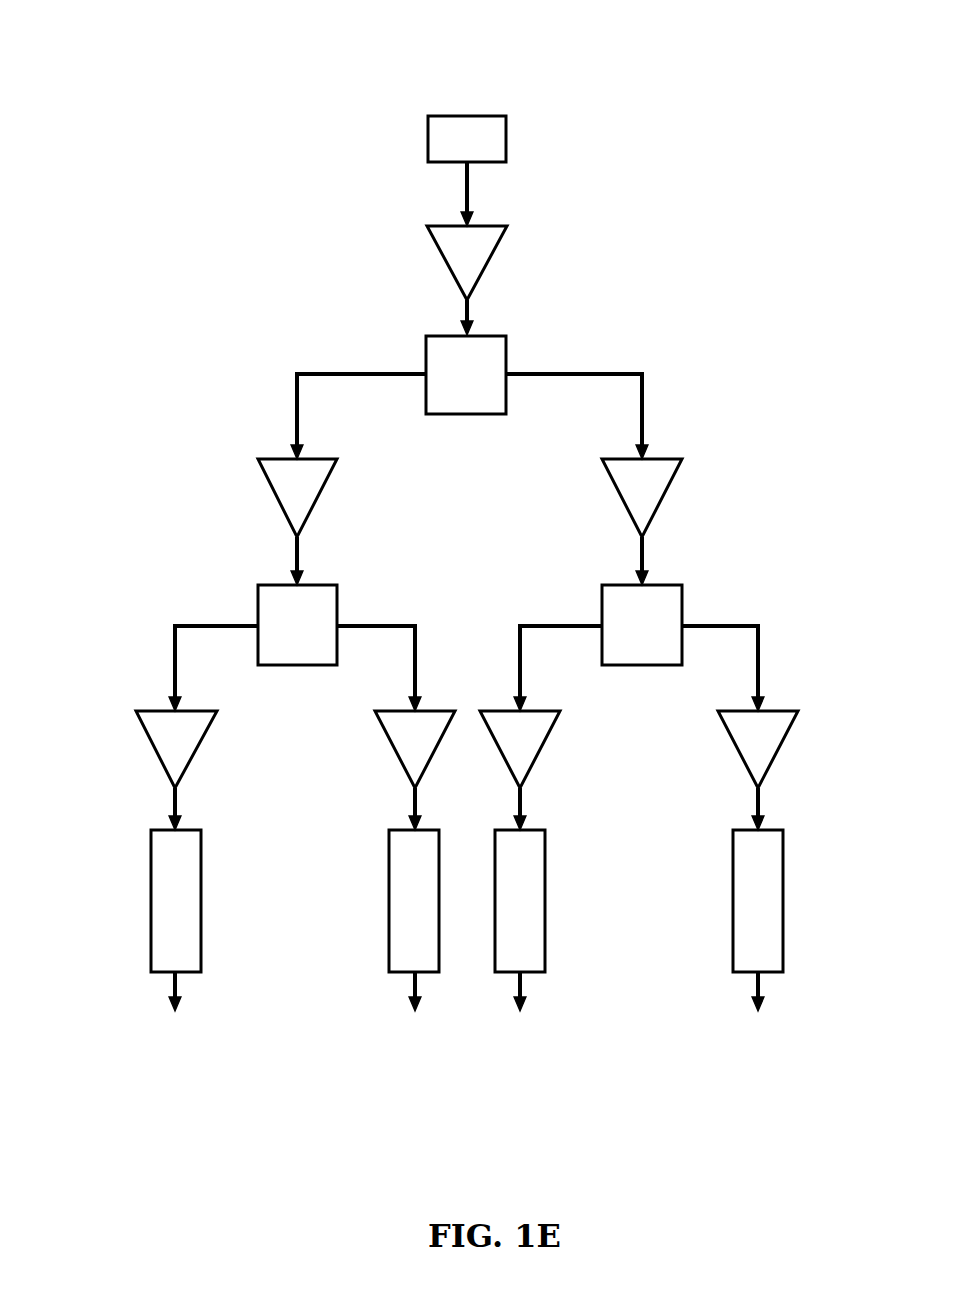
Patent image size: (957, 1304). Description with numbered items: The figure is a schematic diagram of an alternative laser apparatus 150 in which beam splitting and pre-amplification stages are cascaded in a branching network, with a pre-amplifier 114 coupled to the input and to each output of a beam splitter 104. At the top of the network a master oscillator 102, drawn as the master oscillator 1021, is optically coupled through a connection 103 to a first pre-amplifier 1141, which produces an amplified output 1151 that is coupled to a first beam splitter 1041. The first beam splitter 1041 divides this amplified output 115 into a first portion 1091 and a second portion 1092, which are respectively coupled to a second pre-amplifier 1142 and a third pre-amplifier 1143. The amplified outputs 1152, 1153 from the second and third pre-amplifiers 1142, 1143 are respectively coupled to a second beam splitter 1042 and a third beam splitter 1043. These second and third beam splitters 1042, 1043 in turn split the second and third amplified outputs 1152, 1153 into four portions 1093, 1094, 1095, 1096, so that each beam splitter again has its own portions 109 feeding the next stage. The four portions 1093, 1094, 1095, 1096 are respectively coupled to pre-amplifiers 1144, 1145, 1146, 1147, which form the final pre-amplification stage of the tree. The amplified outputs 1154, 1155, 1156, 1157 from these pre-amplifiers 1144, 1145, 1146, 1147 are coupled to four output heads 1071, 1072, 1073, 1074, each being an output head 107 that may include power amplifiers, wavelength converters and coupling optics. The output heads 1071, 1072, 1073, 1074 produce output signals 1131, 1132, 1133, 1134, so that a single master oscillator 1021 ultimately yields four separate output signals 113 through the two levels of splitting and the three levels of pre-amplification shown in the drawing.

The apparatus 150 is at (290, 70).
The master oscillator 102 is at (463, 103).
The master oscillator 1021 is at (467, 116).
The seed beam 103 is at (470, 197).
The pre-amplifier 114 is at (467, 507).
The pre-amplifier 1141 is at (444, 265).
The second pre-amplifier 1142 is at (272, 500).
The third pre-amplifier 1143 is at (662, 500).
The pre-amplifier 1144 is at (192, 755).
The pre-amplifier 1145 is at (394, 753).
The pre-amplifier 1146 is at (540, 752).
The pre-amplifier 1147 is at (736, 750).
The beam splitter 104 is at (475, 483).
The first beam splitter 1041 is at (426, 340).
The second beam splitter 1042 is at (258, 598).
The third beam splitter 1043 is at (678, 598).
The amplified output 115 is at (469, 565).
The amplified output 1151 is at (467, 316).
The amplified output 1152 is at (297, 556).
The amplified output 1153 is at (642, 556).
The amplified output 1154 is at (175, 803).
The amplified output 1155 is at (415, 803).
The amplified output 1156 is at (520, 803).
The amplified output 1157 is at (758, 803).
The portion 109 is at (477, 537).
The first portion 1091 is at (295, 400).
The second portion 1092 is at (645, 402).
The portion 1093 is at (175, 638).
The portion 1094 is at (418, 630).
The portion 1095 is at (520, 650).
The portion 1096 is at (760, 648).
The output head 107 is at (467, 901).
The output head 1071 is at (201, 900).
The output head 1072 is at (389, 900).
The output head 1073 is at (545, 900).
The output head 1074 is at (733, 900).
The output signal 113 is at (473, 992).
The output signal 1131 is at (175, 985).
The output signal 1132 is at (415, 985).
The output signal 1133 is at (520, 985).
The output signal 1134 is at (758, 985).